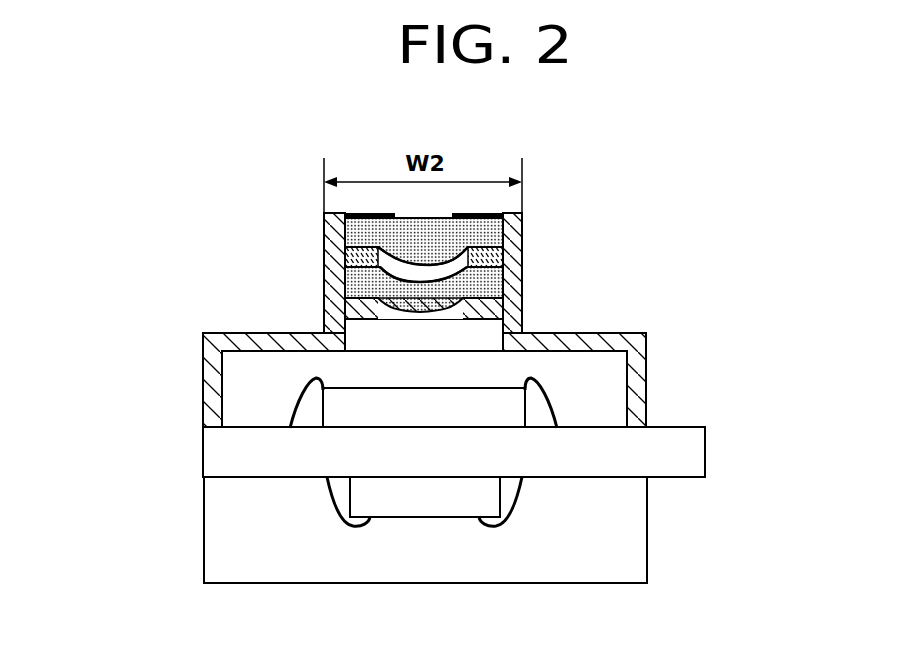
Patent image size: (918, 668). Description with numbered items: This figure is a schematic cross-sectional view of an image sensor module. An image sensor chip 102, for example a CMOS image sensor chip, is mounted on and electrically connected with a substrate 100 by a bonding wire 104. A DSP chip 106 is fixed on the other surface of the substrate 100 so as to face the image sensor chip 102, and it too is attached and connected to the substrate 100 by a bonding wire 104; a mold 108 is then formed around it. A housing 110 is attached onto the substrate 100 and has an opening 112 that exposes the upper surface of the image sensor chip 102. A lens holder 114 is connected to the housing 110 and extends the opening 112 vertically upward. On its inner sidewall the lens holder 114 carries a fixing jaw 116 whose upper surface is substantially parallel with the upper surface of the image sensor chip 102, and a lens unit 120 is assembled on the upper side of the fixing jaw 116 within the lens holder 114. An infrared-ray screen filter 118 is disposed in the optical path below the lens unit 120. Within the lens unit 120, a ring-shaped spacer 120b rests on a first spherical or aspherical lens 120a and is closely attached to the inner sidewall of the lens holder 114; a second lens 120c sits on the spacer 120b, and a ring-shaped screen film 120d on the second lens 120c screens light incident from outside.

The substrate 100 is at (215, 453).
The image sensor chip 102 is at (327, 410).
The bonding wire 104 is at (327, 390).
The DSP chip 106 is at (357, 496).
The mold 108 is at (210, 565).
The housing 110 is at (212, 343).
The opening 112 is at (515, 330).
The lens holder 114 is at (516, 249).
The fixing jaw 116 is at (503, 300).
The infrared-ray screen filter 118 is at (357, 335).
The lens unit 120 is at (333, 245).
The first lens 120a is at (353, 284).
The spacer 120b is at (352, 254).
The second lens 120c is at (345, 230).
The screen film 120d is at (338, 213).